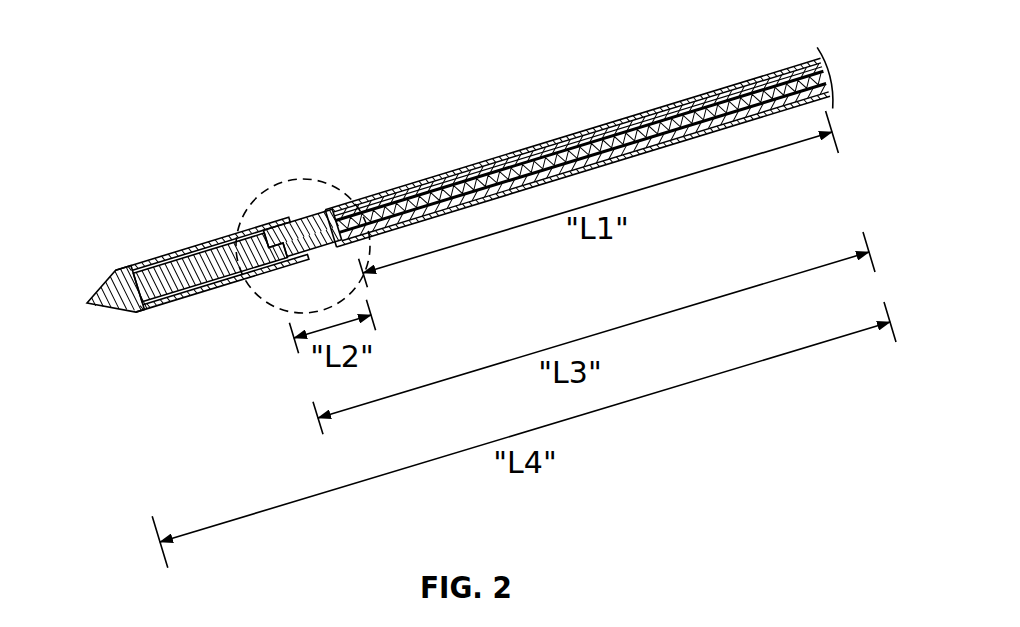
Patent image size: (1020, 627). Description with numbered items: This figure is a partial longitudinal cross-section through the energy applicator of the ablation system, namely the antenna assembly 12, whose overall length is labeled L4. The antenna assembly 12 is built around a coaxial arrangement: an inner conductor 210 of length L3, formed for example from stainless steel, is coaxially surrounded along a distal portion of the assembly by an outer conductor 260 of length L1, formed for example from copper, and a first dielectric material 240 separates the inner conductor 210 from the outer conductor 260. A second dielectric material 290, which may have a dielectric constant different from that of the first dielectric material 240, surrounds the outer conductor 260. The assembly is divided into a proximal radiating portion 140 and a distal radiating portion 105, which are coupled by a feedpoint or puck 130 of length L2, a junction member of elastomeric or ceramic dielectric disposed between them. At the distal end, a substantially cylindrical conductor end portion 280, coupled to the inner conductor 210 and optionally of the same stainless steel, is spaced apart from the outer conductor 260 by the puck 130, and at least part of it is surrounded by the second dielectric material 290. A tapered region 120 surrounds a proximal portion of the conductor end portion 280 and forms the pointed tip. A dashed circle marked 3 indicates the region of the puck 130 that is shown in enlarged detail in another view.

The antenna assembly 12 is at (324, 75).
The distal radiating portion 105 is at (174, 322).
The tapered region 120 is at (104, 284).
The puck 130 is at (296, 213).
The proximal radiating portion 140 is at (566, 96).
The inner conductor 210 is at (829, 68).
The first dielectric material 240 is at (830, 90).
The outer conductor 260 is at (713, 96).
The conductor end portion 280 is at (217, 252).
The second dielectric material 290 is at (553, 140).
The detail view circle for FIG. 3 is at (304, 179).